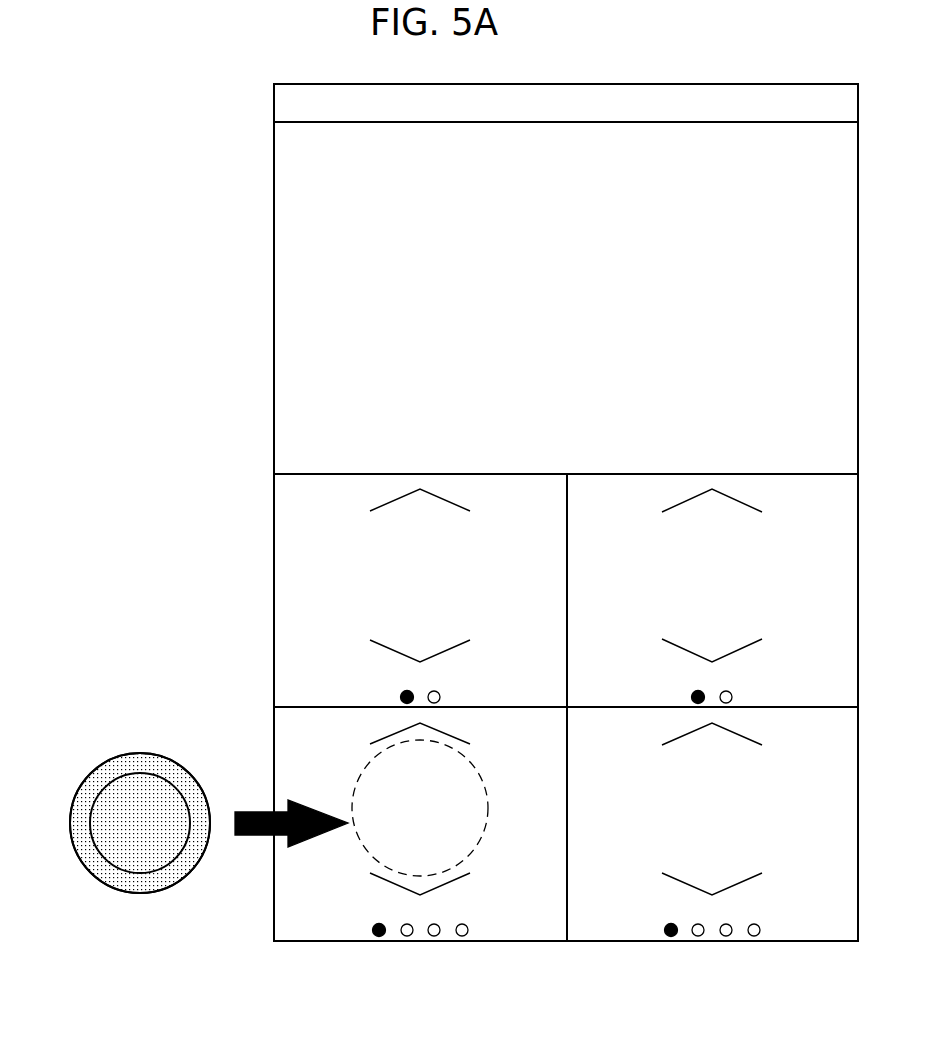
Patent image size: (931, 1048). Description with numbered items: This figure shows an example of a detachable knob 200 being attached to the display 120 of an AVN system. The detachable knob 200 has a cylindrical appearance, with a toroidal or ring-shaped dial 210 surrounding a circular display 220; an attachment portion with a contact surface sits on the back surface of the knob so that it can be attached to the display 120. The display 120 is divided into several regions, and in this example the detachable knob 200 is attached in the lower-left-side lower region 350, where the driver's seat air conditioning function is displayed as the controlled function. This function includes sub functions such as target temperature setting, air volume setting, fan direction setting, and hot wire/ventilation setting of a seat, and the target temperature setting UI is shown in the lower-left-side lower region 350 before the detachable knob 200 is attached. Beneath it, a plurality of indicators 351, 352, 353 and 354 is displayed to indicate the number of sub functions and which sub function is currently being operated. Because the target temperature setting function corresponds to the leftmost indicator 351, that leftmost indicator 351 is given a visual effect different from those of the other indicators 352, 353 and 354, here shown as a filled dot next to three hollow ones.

The display 120 is at (274, 298).
The detachable knob 200 is at (70, 823).
The dial 210 is at (95, 865).
The display 220 is at (141, 793).
The lower-left-side lower region 350 is at (380, 871).
The leftmost indicator 351 is at (379, 937).
The indicator 352 is at (407, 936).
The indicator 353 is at (434, 936).
The indicator 354 is at (462, 936).